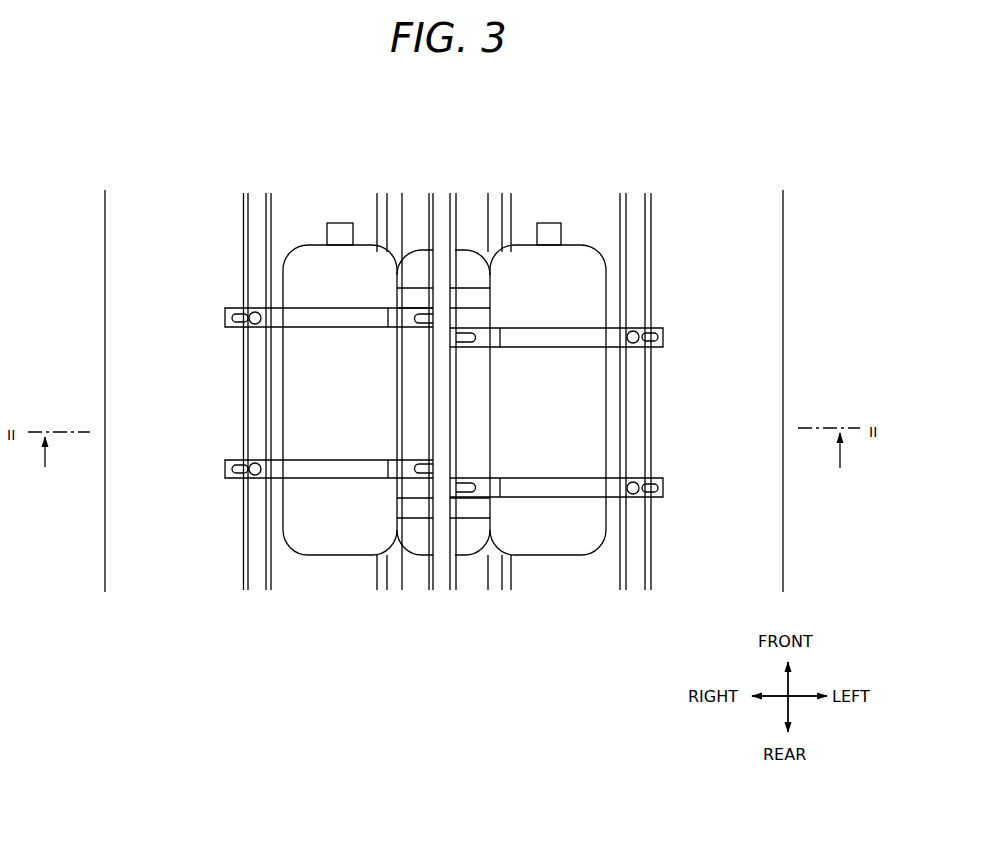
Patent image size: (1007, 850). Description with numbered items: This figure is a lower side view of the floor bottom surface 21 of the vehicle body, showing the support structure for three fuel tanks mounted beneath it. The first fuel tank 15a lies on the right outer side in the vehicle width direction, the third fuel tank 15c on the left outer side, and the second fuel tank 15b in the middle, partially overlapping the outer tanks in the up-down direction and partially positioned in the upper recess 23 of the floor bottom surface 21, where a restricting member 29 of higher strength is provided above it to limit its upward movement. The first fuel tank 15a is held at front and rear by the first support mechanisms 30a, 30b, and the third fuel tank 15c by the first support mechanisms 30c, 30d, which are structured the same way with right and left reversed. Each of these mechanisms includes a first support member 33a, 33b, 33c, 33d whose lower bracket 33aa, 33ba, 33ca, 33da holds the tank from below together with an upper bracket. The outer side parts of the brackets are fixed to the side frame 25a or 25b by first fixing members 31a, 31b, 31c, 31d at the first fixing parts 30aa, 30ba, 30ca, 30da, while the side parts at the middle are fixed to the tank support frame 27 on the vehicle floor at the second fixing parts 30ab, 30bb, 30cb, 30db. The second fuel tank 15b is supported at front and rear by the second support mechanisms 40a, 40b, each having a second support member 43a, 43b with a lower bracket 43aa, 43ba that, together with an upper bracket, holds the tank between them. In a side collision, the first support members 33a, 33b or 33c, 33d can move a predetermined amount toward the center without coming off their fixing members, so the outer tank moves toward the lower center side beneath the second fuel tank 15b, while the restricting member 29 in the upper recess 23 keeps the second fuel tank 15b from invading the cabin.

The floor bottom surface 21 is at (757, 225).
The upper recess 23 is at (421, 209).
The side frame 25a is at (243, 575).
The side frame 25b is at (652, 575).
The tank support frame 27 is at (442, 568).
The restricting member 29 is at (413, 211).
The first fuel tank 15a is at (248, 263).
The second fuel tank 15b is at (475, 442).
The third fuel tank 15c is at (600, 272).
The first support mechanism 30a is at (233, 286).
The first support mechanism 30b is at (233, 437).
The first support mechanism 30c is at (656, 304).
The first support mechanism 30d is at (656, 456).
The first fixing part 30aa is at (217, 318).
The first fixing part 30ba is at (217, 468).
The first fixing part 30ca is at (669, 337).
The first fixing part 30da is at (669, 487).
The second fixing part 30ab is at (534, 338).
The second fixing part 30cb is at (469, 319).
The second fixing part 30bb is at (351, 467).
The second fixing part 30db is at (415, 483).
The first fixing member 31a is at (251, 311).
The first fixing member 31b is at (251, 462).
The first fixing member 31c is at (638, 329).
The first fixing member 31d is at (638, 480).
The first support member 33a is at (250, 334).
The lower bracket 33aa is at (293, 320).
The first support member 33b is at (250, 483).
The lower bracket 33ba is at (293, 472).
The first support member 33c is at (636, 352).
The lower bracket 33ca is at (593, 337).
The first support member 33d is at (636, 502).
The lower bracket 33da is at (593, 487).
The second support mechanism 40a is at (417, 271).
The second support mechanism 40b is at (470, 530).
The second support member 43a is at (482, 228).
The lower bracket 43aa is at (468, 292).
The second support member 43b is at (425, 579).
The lower bracket 43ba is at (418, 507).